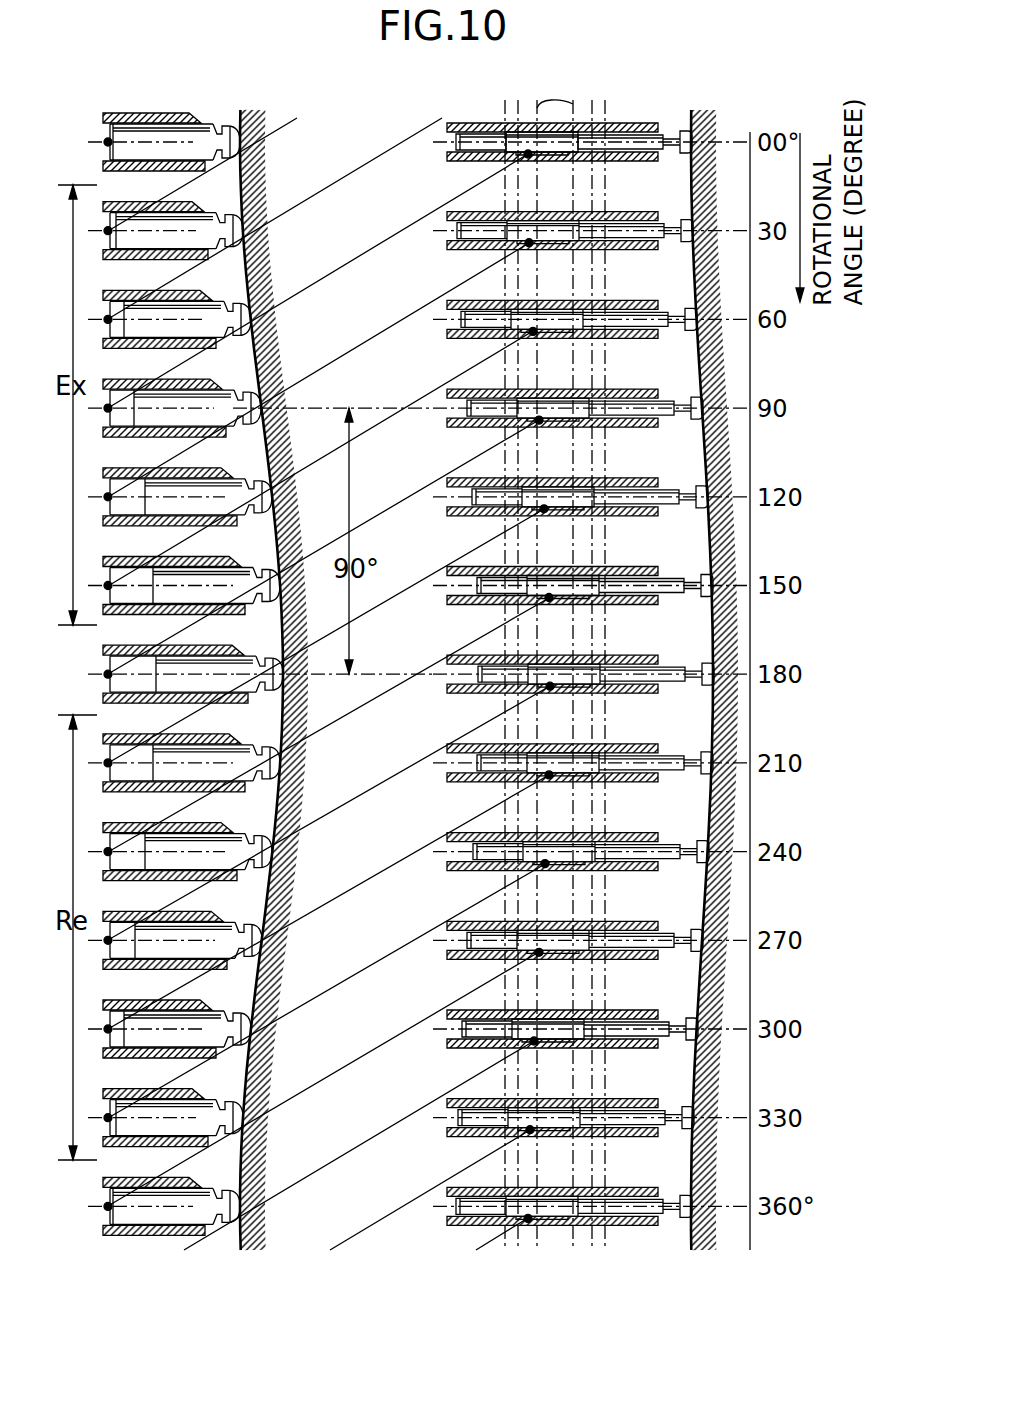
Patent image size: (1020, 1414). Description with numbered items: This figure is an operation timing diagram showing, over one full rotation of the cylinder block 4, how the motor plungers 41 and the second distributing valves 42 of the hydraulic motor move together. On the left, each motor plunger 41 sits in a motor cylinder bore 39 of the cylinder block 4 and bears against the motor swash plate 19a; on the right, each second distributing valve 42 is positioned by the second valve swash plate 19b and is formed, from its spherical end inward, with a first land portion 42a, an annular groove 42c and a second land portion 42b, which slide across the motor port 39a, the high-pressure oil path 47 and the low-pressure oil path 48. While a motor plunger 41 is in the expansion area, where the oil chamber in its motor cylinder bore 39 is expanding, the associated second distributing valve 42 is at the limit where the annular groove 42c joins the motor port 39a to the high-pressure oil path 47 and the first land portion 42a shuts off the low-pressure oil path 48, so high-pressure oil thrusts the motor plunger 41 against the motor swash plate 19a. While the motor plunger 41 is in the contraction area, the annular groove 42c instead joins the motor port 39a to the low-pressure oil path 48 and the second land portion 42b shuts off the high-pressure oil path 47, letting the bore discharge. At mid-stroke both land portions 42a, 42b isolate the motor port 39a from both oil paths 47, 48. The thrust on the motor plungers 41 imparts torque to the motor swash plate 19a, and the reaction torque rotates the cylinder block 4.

The cylinder block 4 is at (127, 116).
The motor cylinder bore 39 is at (161, 101).
The motor port 39a is at (548, 88).
The motor swash plate 19a is at (248, 114).
The second valve swash plate 19b is at (703, 128).
The motor plunger 41 is at (172, 661).
The second distributing valve 42 is at (577, 663).
The first land portion 42a is at (635, 168).
The second land portion 42b is at (460, 170).
The annular groove 42c is at (542, 169).
The high-pressure oil path 47 is at (512, 110).
The low-pressure oil path 48 is at (598, 108).